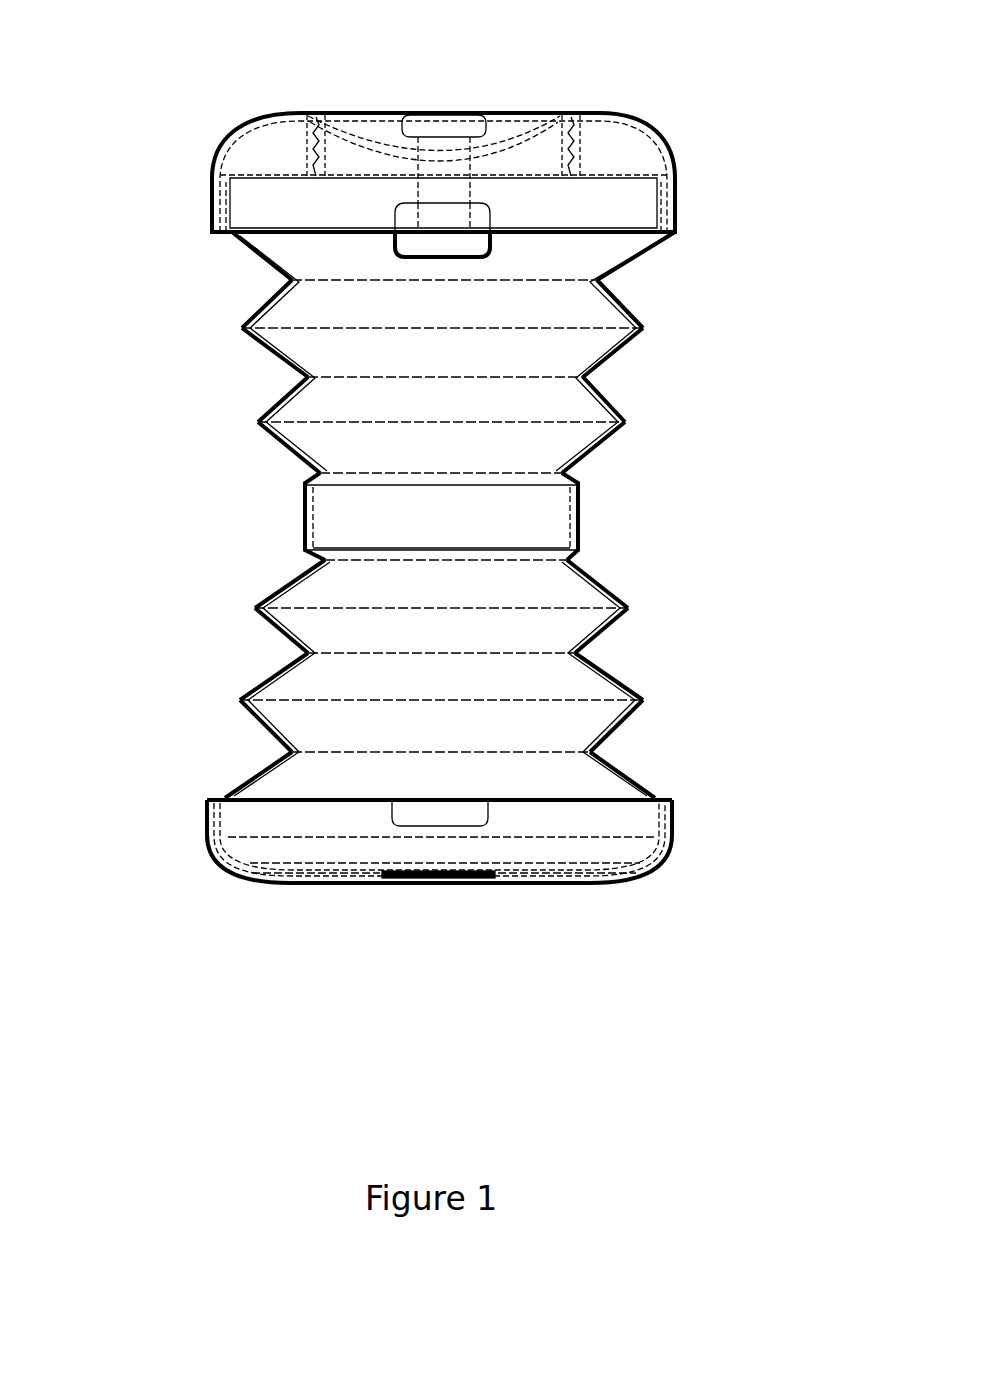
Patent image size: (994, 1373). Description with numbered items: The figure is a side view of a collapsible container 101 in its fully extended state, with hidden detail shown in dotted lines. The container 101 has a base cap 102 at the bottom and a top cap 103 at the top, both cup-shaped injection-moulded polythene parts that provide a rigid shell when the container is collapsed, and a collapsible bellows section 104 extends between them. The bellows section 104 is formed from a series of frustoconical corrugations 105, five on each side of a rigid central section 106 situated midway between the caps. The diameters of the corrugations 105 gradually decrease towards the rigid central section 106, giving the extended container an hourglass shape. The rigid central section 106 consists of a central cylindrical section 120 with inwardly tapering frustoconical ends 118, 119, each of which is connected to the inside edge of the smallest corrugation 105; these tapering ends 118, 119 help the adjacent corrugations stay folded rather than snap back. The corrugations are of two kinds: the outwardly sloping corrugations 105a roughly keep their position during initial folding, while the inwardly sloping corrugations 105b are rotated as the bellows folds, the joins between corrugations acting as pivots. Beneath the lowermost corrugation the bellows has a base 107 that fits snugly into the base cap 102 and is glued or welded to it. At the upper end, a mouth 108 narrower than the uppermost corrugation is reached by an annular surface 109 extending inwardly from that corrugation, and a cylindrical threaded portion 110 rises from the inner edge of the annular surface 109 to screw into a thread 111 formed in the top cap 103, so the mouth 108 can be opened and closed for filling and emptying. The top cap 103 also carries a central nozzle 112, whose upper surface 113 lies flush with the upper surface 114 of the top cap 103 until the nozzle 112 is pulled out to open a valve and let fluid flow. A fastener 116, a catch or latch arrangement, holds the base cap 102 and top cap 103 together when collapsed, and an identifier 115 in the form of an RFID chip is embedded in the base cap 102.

The container 101 is at (175, 188).
The base cap 102 is at (287, 890).
The top cap 103 is at (330, 112).
The collapsible bellows section 104 is at (472, 408).
The frustoconical corrugations 105 is at (632, 310).
The outwardly sloping corrugations 105a is at (263, 303).
The inwardly sloping corrugations 105b is at (242, 252).
The rigid central section 106 is at (623, 498).
The base 107 is at (223, 798).
The mouth 108 is at (527, 153).
The annular surface 109 is at (647, 177).
The cylindrical threaded portion 110 is at (580, 155).
The thread 111 is at (345, 128).
The nozzle 112 is at (467, 112).
The upper surface of nozzle 113 is at (428, 112).
The upper surface of top cap 114 is at (310, 112).
The identifier 115 is at (438, 880).
The fastener 116 is at (463, 810).
The inwardly tapering end 118 is at (580, 527).
The inwardly tapering end 119 is at (580, 482).
The central cylindrical section 120 is at (627, 560).